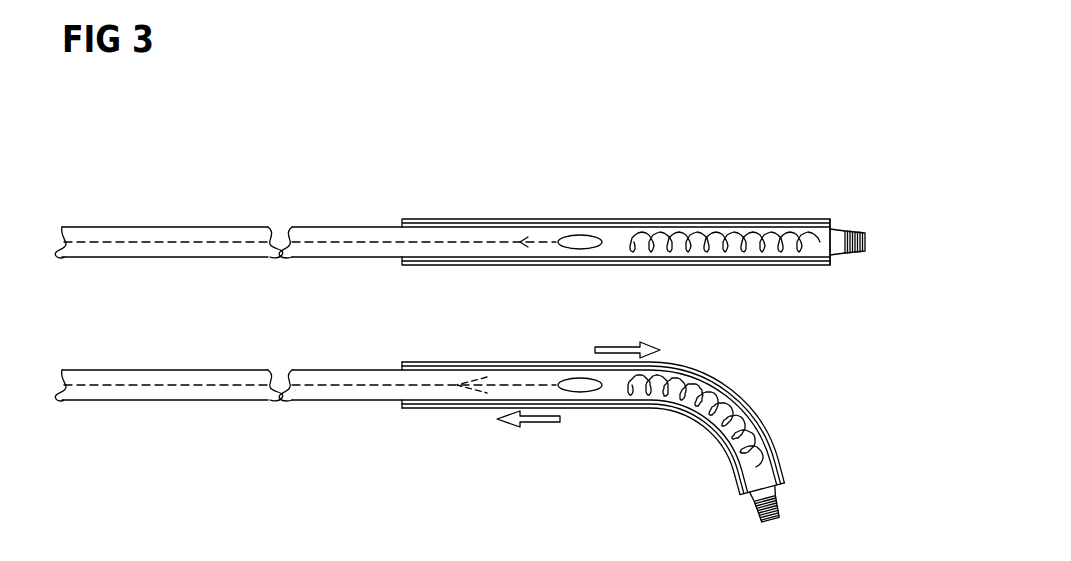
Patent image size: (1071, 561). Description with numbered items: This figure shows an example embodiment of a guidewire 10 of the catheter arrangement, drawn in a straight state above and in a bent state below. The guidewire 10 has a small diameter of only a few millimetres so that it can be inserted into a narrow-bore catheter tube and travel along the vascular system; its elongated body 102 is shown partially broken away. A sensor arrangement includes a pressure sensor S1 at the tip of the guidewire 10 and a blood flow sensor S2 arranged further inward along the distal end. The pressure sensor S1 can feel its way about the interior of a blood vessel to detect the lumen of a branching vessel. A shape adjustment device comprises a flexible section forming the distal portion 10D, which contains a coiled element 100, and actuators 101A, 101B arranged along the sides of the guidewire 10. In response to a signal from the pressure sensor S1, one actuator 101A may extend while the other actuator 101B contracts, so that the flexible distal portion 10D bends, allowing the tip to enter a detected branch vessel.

The guidewire 10 is at (114, 186).
The optical fiber / core 102 is at (188, 241).
The actuator 101A is at (404, 219).
The actuator 101B is at (404, 265).
The blood flow sensor S2 is at (578, 240).
The spring coil 100 is at (713, 230).
The pressure sensor S1 is at (851, 232).
The flexible distal portion 10D is at (552, 268).